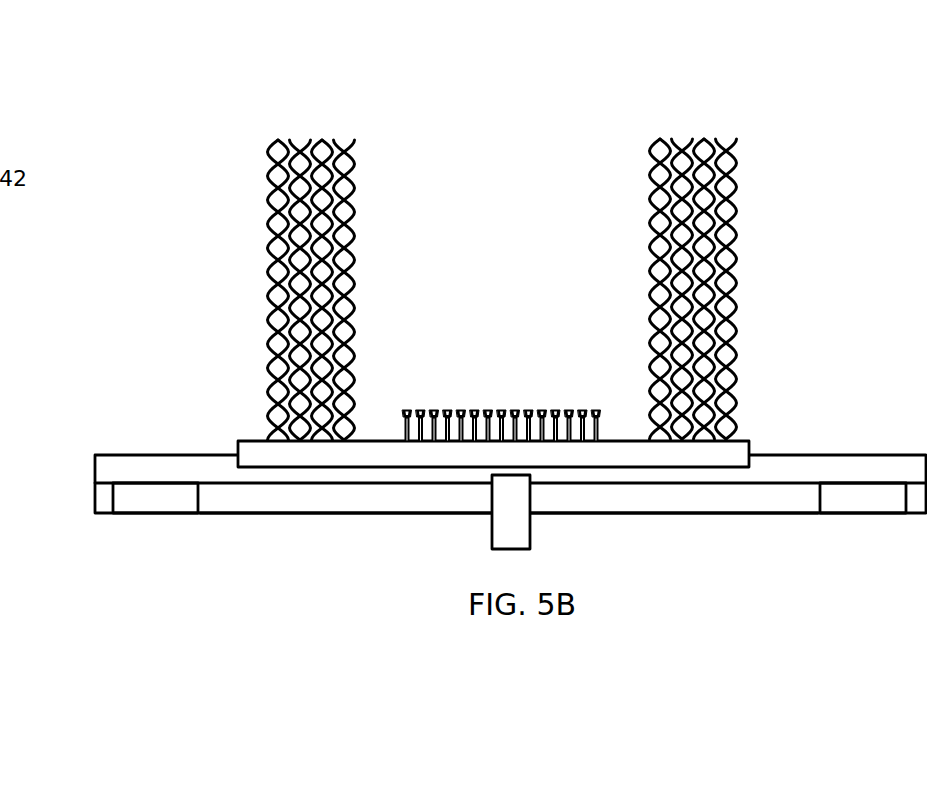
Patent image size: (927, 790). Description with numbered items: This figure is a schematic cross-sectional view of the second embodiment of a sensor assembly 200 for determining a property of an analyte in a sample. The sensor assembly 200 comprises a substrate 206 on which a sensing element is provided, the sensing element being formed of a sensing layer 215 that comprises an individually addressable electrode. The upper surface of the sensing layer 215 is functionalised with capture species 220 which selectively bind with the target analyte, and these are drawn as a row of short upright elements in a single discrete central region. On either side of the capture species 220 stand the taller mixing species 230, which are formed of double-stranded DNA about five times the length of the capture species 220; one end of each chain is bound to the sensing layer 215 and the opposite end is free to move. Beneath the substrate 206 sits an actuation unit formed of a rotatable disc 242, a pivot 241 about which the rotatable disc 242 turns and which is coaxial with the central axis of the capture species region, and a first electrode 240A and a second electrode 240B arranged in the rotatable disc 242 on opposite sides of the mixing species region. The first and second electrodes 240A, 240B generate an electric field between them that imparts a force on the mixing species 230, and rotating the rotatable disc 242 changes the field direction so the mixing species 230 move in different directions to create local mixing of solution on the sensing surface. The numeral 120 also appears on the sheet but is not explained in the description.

The sensor assembly 200 is at (181, 214).
The substrate 206 is at (97, 469).
The sensing layer 215 is at (268, 455).
The capture species 220 is at (522, 407).
The mixing species 230 is at (307, 131).
The first electrode 240A is at (155, 500).
The second electrode 240B is at (851, 500).
The pivot 241 is at (525, 530).
The rotatable disc 242 is at (287, 504).
The package component 120 is at (703, 672).